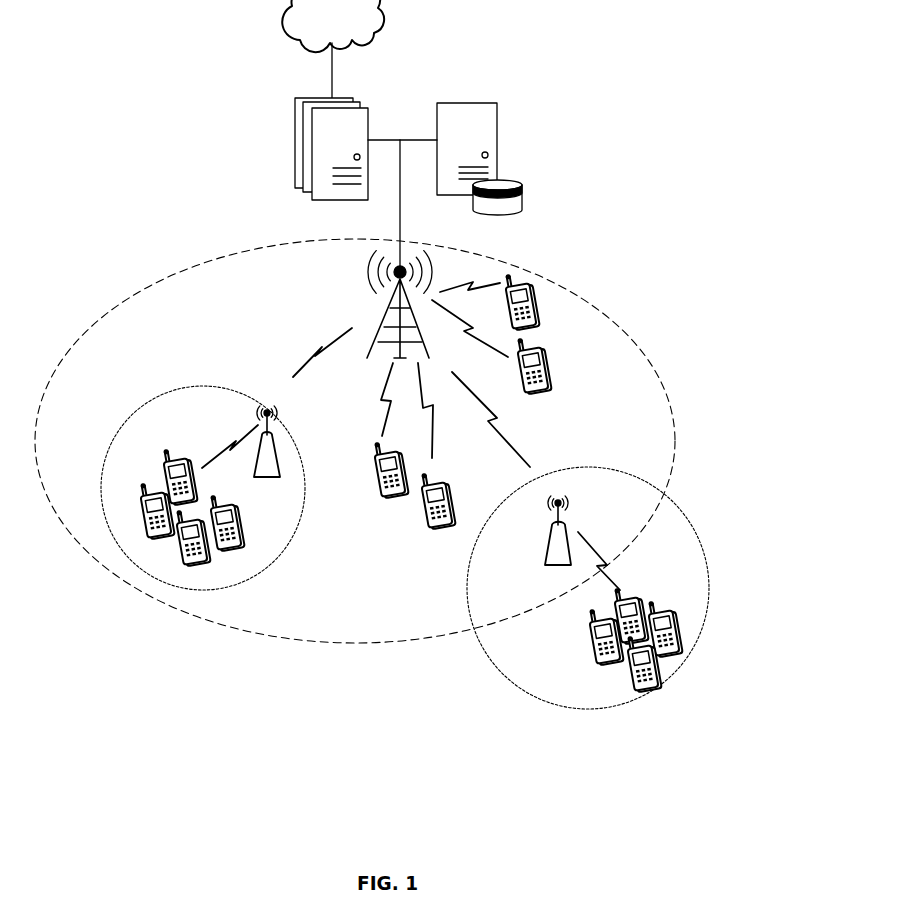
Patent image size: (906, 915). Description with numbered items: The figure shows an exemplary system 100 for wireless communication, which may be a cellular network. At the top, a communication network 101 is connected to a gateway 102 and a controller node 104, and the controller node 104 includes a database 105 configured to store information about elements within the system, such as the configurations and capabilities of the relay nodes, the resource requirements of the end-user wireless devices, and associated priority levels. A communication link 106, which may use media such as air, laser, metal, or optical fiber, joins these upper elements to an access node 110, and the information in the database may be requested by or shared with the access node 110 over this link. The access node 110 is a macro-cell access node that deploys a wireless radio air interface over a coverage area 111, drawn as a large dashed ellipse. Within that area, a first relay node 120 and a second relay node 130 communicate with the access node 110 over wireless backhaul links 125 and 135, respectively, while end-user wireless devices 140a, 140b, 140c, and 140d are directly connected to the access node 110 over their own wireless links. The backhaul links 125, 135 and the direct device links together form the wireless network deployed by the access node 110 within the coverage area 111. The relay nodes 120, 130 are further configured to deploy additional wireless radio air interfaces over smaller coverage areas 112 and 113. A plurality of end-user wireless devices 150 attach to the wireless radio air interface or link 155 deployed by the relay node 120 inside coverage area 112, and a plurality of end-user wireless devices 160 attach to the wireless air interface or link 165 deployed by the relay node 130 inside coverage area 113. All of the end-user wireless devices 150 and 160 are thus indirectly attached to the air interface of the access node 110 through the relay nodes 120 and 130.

The system 100 is at (434, 45).
The communication network 101 is at (348, 27).
The gateway 102 is at (300, 98).
The controller node 104 is at (497, 103).
The database 105 is at (522, 182).
The communication link 106 is at (400, 216).
The access node 110 is at (387, 317).
The coverage area 111 is at (278, 643).
The coverage area 112 is at (115, 435).
The coverage area 113 is at (703, 628).
The relay node 120 is at (277, 450).
The wireless communication link 125 is at (322, 350).
The relay node 130 is at (568, 527).
The wireless communication link 135 is at (498, 437).
The end-user wireless device 140a is at (527, 286).
The end-user wireless device 140b is at (545, 356).
The end-user wireless device 140c is at (392, 500).
The end-user wireless device 140d is at (444, 530).
The end-user wireless devices 150 is at (246, 553).
The wireless radio air interface or link 155 is at (240, 445).
The end-user wireless devices 160 is at (590, 678).
The wireless air interface or link 165 is at (612, 578).